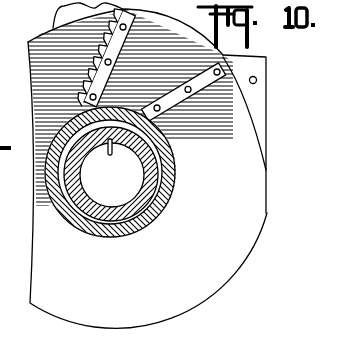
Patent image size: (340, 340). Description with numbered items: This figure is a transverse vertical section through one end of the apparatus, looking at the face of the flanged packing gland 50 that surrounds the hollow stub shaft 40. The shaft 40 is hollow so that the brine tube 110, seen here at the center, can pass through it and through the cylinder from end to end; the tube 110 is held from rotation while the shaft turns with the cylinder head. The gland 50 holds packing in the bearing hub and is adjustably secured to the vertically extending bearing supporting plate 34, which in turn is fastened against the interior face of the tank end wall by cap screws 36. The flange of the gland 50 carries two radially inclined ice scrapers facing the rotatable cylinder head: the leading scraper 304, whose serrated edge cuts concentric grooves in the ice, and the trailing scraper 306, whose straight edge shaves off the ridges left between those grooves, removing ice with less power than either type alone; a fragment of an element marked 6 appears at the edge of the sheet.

The leading ice scraper 304 is at (54, 29).
The trailing ice scraper 306 is at (186, 95).
The cap screw 36 is at (256, 77).
The bearing supporting plate 34 is at (253, 92).
The flanged packing gland 50 is at (235, 208).
The tube 110 is at (106, 214).
The hollow stub shaft 40 is at (150, 212).
The frame 6 is at (5, 201).